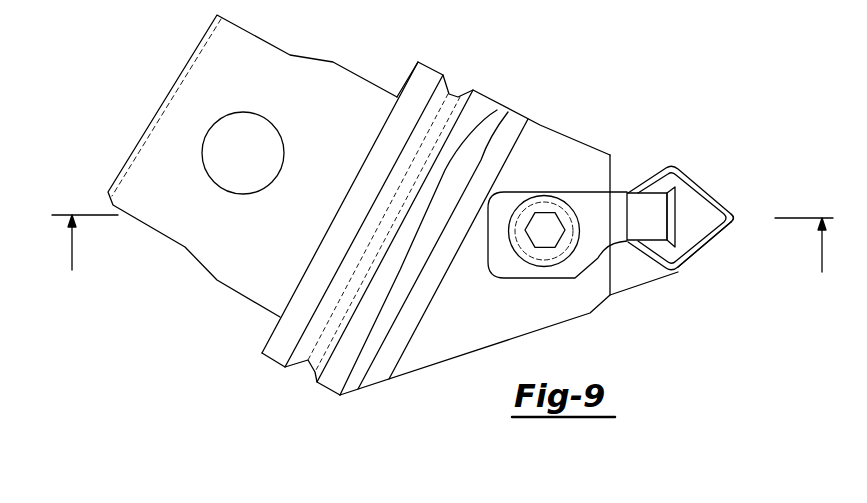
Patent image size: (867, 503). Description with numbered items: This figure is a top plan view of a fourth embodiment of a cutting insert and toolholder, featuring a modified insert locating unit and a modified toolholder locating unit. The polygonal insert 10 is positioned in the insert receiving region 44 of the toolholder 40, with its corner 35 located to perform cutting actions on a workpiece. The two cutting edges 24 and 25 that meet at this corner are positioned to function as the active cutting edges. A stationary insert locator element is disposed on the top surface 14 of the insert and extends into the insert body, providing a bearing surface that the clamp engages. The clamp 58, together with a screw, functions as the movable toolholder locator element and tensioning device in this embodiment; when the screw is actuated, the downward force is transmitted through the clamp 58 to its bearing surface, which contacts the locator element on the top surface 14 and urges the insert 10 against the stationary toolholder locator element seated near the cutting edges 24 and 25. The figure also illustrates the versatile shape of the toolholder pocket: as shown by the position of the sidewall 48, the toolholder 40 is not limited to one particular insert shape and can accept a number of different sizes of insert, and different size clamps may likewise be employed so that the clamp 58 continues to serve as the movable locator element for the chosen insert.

The polygonal insert 10 is at (718, 110).
The top surface 14 is at (708, 232).
The cutting edge 24 is at (722, 198).
The cutting edge 25 is at (718, 243).
The corner 35 is at (733, 210).
The toolholder 40 is at (560, 145).
The insert receiving region 44 is at (650, 275).
The sidewall 48 is at (619, 275).
The clamp 58 is at (588, 208).